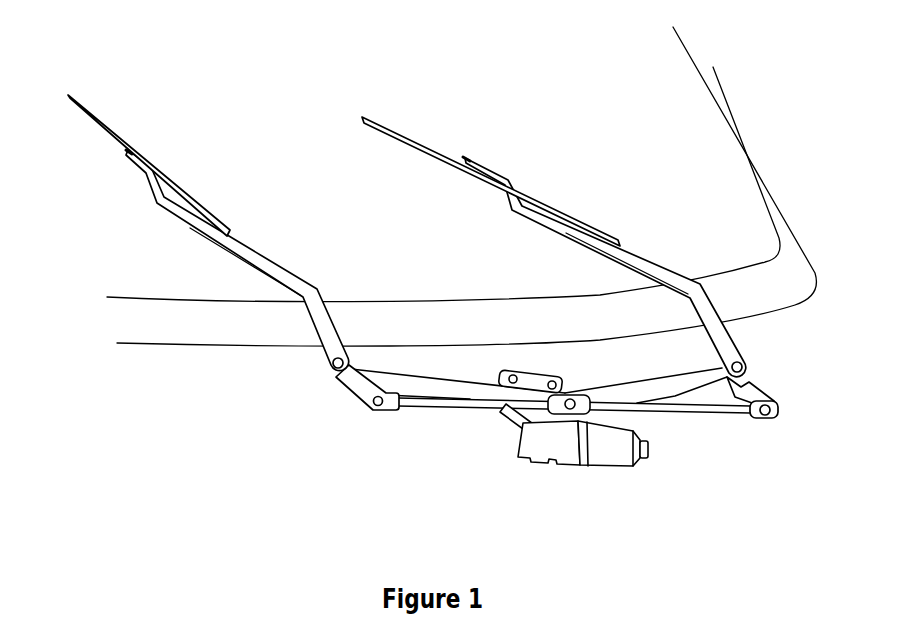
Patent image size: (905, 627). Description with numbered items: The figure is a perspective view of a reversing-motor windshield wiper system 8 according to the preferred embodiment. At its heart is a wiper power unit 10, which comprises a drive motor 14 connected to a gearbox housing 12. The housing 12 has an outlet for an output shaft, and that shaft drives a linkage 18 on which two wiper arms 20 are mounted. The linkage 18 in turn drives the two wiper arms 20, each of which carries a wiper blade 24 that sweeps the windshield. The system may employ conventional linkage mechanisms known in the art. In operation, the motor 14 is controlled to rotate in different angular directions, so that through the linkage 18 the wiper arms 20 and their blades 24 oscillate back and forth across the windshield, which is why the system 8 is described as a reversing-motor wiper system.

The reversing-motor windshield wiper system 8 is at (614, 178).
The wiper power unit 10 is at (595, 486).
The gearbox housing 12 is at (555, 447).
The drive motor 14 is at (609, 471).
The linkage 18 is at (437, 403).
The wiper arm 20 is at (318, 300).
The wiper blade 24 is at (192, 198).